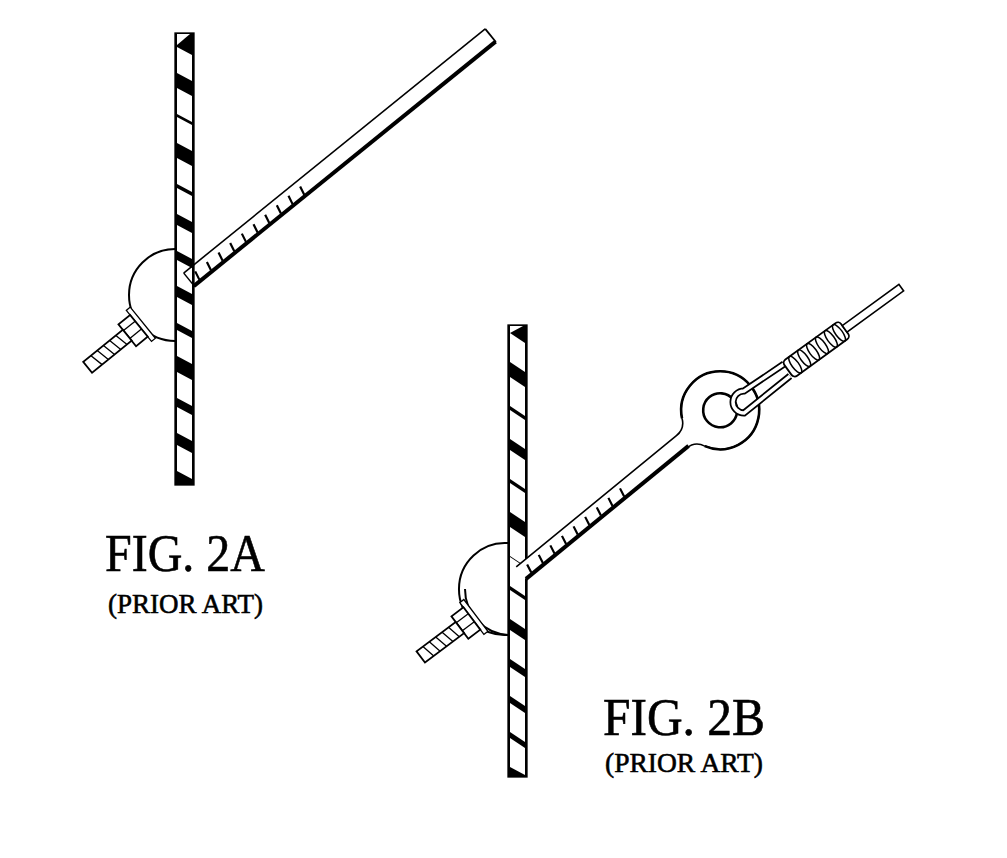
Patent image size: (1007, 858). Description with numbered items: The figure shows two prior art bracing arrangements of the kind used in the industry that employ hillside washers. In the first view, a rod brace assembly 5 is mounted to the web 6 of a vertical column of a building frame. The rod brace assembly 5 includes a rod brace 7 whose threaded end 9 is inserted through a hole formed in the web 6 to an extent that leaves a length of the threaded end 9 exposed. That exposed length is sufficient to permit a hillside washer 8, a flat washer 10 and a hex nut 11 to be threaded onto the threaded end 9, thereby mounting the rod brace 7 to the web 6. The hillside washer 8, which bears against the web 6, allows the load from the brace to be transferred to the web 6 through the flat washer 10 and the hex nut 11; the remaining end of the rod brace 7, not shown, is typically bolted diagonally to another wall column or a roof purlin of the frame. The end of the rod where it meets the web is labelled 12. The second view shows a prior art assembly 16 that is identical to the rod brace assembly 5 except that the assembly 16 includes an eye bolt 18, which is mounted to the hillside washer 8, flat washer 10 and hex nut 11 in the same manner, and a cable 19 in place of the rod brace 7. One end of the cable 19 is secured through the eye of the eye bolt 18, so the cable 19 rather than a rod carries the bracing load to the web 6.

In FIG. 2A, the rod brace assembly 5 is at (388, 100).
In FIG. 2A, the web 6 is at (196, 422).
In FIG. 2A, the rod brace 7 is at (347, 168).
In FIG. 2A, the hillside washer 8 is at (157, 253).
In FIG. 2B, the hillside washer 8 is at (500, 635).
In FIG. 2A, the threaded end 9 is at (86, 370).
In FIG. 2B, the threaded end 9 is at (415, 655).
In FIG. 2A, the flat washer 10 is at (132, 307).
In FIG. 2B, the flat washer 10 is at (461, 596).
In FIG. 2A, the hex nut 11 is at (112, 310).
In FIG. 2B, the hex nut 11 is at (446, 606).
In FIG. 2A, the rod end 12 is at (198, 265).
In FIG. 2B, the prior art assembly 16 is at (481, 540).
In FIG. 2B, the eye bolt 18 is at (664, 447).
In FIG. 2B, the cable 19 is at (862, 312).